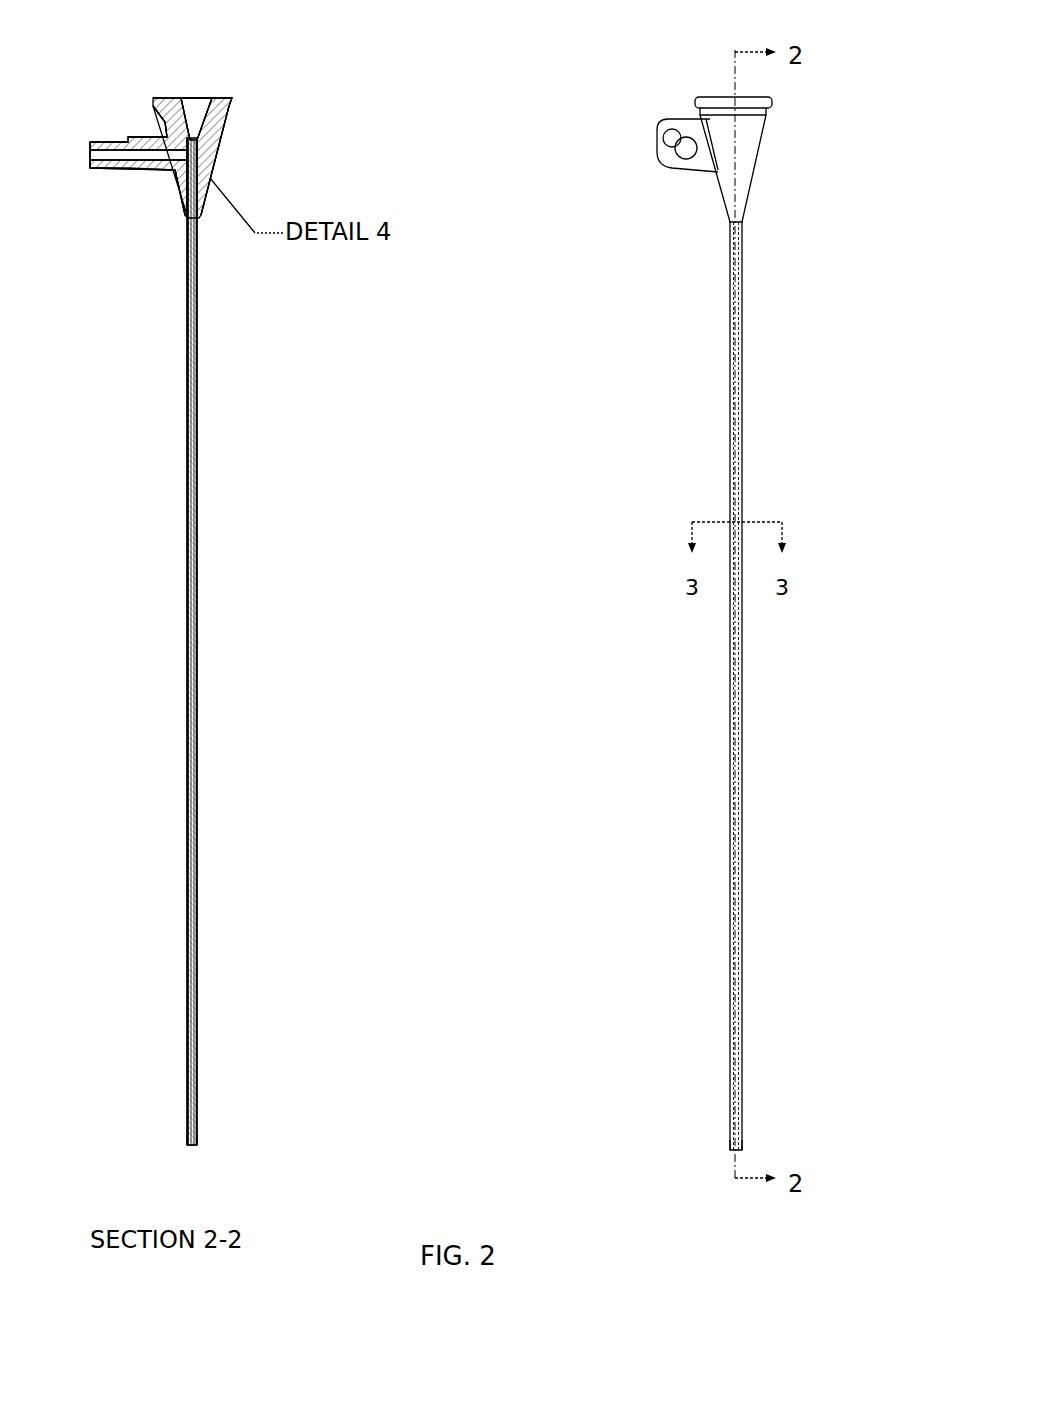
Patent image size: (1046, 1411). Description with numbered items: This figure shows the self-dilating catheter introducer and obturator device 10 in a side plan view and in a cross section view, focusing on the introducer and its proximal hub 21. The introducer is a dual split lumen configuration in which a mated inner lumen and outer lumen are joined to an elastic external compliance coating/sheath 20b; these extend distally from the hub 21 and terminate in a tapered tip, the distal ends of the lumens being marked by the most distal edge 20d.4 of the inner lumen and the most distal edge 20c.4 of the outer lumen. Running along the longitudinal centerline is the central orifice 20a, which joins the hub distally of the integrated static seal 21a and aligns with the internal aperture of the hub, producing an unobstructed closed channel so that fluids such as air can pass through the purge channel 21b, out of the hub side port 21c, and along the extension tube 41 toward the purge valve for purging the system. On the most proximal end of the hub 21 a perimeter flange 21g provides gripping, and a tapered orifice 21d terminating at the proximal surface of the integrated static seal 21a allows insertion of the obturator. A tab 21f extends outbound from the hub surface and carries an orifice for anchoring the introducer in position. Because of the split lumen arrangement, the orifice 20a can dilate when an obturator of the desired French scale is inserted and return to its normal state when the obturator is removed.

The self-dilating catheter introducer and obturator device 10 is at (451, 34).
The central orifice 20a is at (186, 420).
The external compliance coating/sheath 20b is at (186, 485).
The most distal edge of outer lumen 20c.4 is at (198, 1147).
The most distal edge of inner lumen 20d.4 is at (191, 1148).
The proximal hub 21 is at (232, 100).
The integrated static seal 21a is at (214, 145).
The purge channel 21b is at (150, 172).
The hub side port 21c is at (175, 172).
The tapered orifice 21d is at (196, 96).
The tab 21f is at (690, 120).
The perimeter flange 21g is at (772, 112).
The extension tube 41 is at (97, 170).